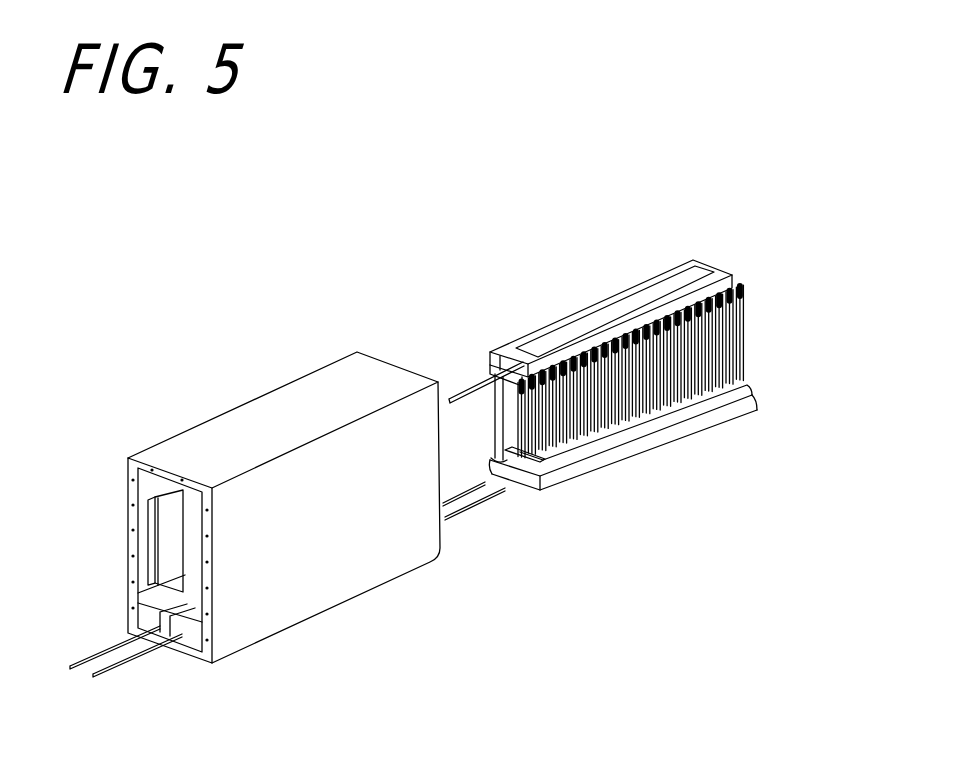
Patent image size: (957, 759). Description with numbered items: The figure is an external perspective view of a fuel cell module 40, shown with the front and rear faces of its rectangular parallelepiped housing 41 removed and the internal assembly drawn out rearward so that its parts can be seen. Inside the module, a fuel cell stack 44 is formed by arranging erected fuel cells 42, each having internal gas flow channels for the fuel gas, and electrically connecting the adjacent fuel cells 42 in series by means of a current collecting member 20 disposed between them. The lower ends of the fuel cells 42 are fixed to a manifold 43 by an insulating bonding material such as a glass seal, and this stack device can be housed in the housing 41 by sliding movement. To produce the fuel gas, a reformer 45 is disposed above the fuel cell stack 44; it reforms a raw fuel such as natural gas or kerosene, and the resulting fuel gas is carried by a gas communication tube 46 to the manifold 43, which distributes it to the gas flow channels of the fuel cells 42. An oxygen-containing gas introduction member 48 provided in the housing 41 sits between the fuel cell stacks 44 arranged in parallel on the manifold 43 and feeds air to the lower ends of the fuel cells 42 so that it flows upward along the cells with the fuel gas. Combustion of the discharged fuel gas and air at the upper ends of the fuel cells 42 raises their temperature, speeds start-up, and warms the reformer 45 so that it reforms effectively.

The current collecting member 20 is at (644, 258).
The fuel cell module 40 is at (240, 165).
The housing 41 is at (286, 402).
The fuel cell 42 is at (736, 294).
The manifold 43 is at (542, 482).
The fuel cell stack 44 is at (742, 375).
The reformer 45 is at (496, 348).
The gas communication tube 46 is at (493, 368).
The oxygen-containing gas introduction member 48 is at (190, 527).